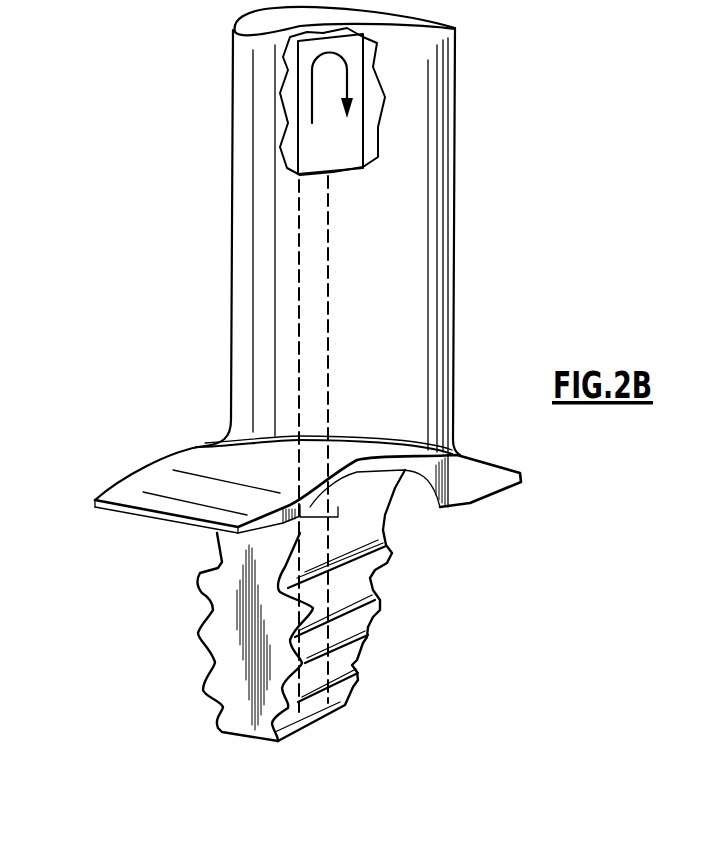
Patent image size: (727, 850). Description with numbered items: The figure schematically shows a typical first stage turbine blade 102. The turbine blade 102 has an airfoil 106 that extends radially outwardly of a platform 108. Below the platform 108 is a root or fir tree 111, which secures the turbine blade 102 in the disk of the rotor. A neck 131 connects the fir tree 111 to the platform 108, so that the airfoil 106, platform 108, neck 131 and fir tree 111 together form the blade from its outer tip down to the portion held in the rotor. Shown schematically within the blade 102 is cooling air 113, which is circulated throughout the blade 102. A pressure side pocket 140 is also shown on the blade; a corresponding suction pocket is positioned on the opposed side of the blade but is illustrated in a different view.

The first stage turbine blade 102 is at (114, 338).
The airfoil 106 is at (400, 277).
The platform 108 is at (200, 493).
The root or fir tree 111 is at (230, 683).
The cooling air 113 is at (313, 317).
The neck 131 is at (307, 553).
The pressure side pocket 140 is at (390, 495).